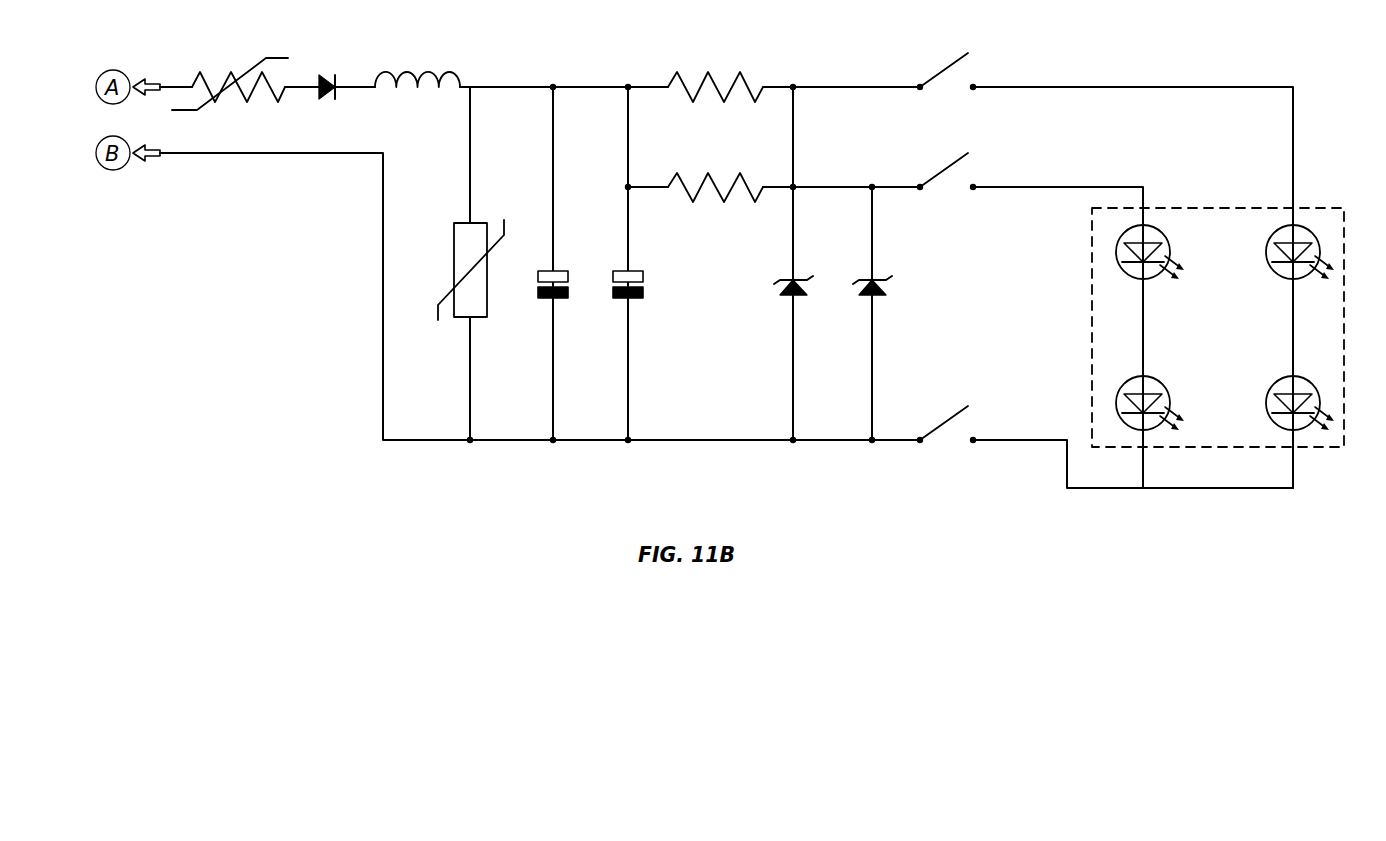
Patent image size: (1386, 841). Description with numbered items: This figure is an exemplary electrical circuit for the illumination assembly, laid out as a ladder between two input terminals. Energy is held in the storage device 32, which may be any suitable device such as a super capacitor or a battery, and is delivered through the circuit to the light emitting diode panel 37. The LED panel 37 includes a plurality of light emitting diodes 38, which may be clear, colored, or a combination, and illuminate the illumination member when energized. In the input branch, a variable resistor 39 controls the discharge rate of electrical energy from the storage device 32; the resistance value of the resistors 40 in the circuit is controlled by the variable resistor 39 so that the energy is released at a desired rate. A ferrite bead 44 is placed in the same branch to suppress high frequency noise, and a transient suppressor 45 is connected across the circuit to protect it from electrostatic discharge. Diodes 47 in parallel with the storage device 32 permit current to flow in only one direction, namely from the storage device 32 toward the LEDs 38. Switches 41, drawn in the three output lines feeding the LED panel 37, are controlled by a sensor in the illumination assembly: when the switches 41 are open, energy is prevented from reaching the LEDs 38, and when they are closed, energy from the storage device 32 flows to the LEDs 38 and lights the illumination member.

The storage device 32 is at (578, 306).
The light emitting diode (LED) panel 37 is at (1203, 447).
The light emitting diodes 38 is at (1116, 404).
The variable resistor 39 is at (210, 82).
The resistors 40 is at (697, 82).
The switches 41 is at (943, 69).
The ferrite bead 44 is at (388, 72).
The transient suppressor 45 is at (454, 262).
The diodes 47 is at (788, 298).